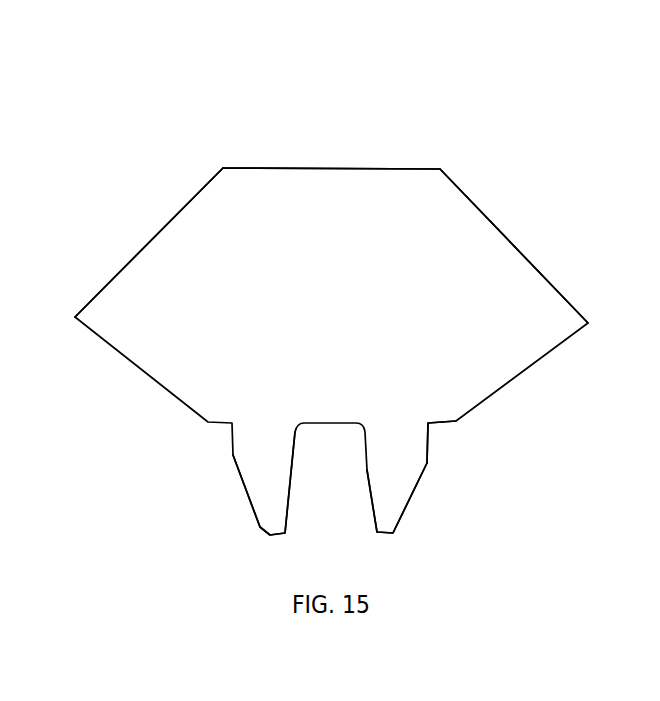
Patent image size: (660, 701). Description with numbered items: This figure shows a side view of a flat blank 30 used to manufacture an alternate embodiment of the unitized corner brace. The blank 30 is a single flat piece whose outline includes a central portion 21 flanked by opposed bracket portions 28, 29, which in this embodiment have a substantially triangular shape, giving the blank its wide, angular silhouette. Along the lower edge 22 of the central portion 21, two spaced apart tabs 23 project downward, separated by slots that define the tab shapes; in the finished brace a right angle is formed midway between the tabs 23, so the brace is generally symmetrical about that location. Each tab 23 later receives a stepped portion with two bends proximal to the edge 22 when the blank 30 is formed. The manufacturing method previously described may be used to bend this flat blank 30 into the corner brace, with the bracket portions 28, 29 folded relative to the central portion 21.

The central portion 21 is at (361, 205).
The edge 22 is at (443, 425).
The tab 23 is at (245, 493).
The opposed bracket portion 28 is at (188, 267).
The opposed bracket portion 29 is at (490, 268).
The flat blank 30 is at (571, 408).